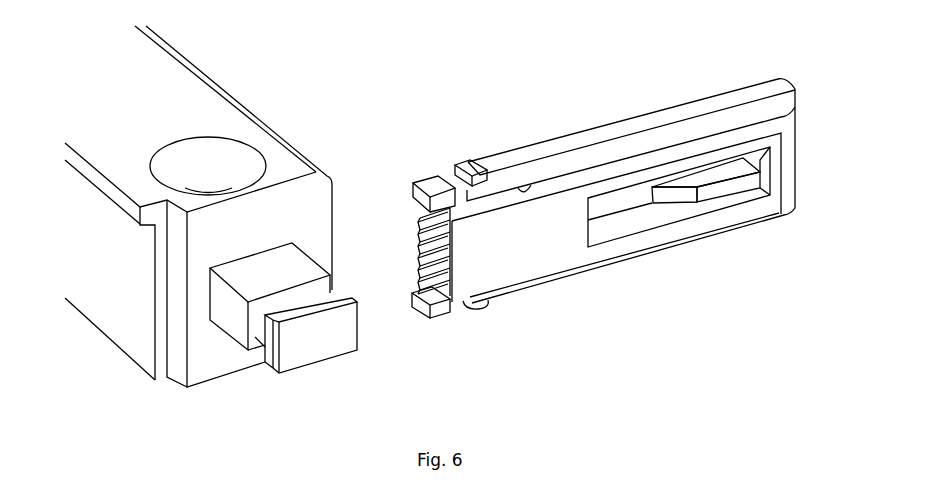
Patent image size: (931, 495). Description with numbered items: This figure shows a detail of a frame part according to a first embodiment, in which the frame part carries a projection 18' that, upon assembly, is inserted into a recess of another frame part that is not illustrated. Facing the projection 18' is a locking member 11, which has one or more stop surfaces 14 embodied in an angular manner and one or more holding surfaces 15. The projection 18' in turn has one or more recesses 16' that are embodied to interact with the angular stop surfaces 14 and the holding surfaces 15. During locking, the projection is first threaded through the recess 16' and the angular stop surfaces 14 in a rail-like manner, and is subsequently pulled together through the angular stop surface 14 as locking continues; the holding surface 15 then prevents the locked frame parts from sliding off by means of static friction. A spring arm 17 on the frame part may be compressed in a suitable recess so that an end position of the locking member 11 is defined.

The locking member 11 is at (563, 211).
The stop surface 14 is at (667, 194).
The holding surface 15 is at (734, 184).
The spring arm 17 is at (462, 172).
The recess 16' is at (198, 331).
The projection 18' is at (388, 350).